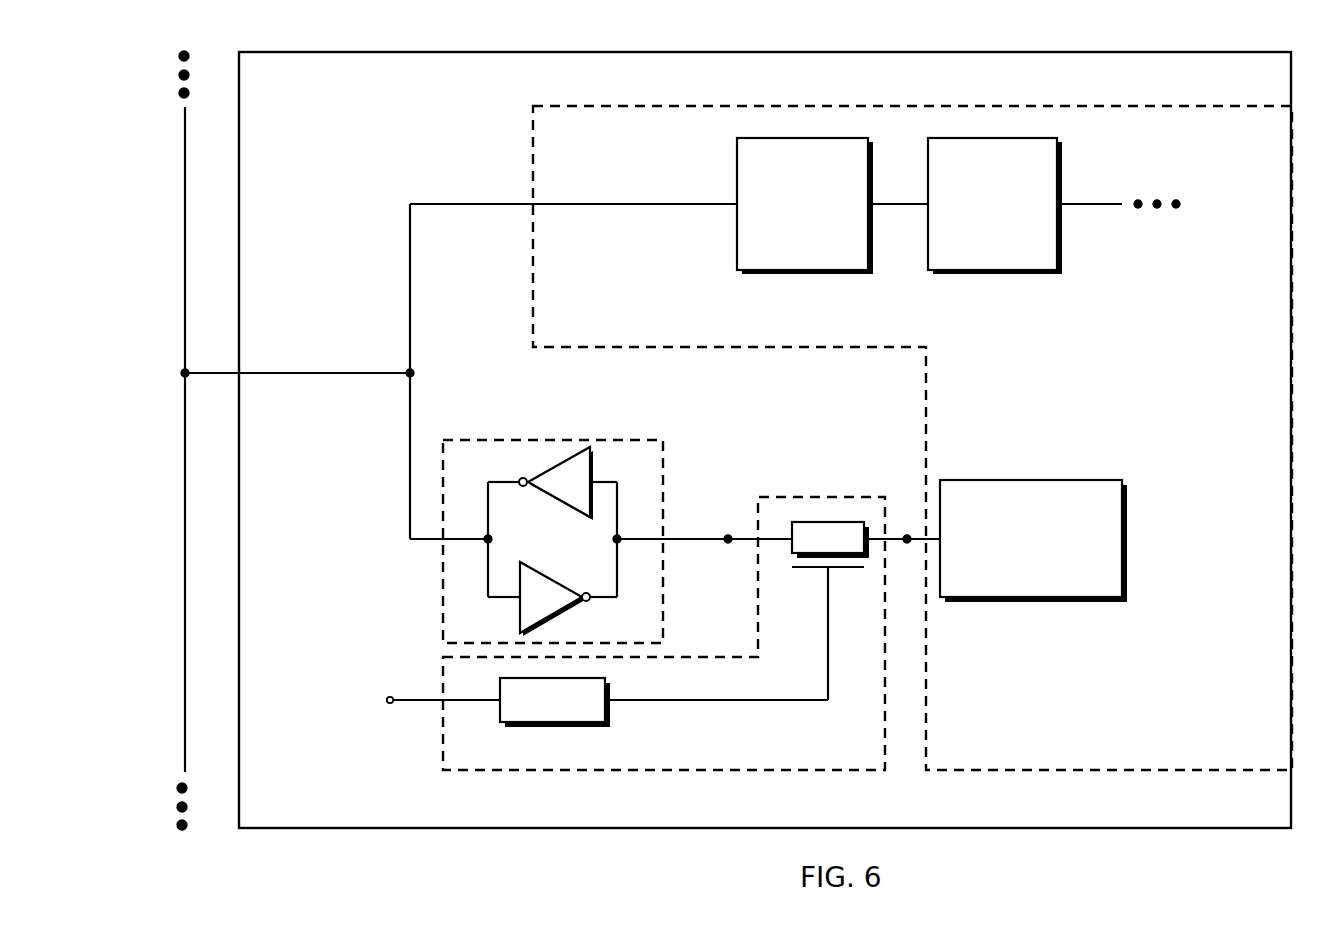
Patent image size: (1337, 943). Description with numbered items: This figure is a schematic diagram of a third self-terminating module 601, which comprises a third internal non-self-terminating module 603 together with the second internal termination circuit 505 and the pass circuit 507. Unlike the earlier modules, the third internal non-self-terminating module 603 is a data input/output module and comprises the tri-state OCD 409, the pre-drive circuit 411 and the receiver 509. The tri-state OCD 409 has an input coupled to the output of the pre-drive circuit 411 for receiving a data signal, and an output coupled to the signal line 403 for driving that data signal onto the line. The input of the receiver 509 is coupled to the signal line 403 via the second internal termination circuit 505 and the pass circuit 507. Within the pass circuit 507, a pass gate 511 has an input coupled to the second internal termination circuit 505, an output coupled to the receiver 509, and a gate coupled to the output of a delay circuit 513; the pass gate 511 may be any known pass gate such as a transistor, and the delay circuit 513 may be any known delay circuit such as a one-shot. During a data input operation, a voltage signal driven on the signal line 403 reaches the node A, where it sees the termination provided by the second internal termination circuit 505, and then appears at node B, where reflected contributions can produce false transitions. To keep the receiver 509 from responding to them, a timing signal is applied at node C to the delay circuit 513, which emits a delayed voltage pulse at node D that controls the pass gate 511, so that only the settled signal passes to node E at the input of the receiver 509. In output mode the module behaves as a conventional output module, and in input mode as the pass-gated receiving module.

The third self-terminating module 601 is at (1280, 52).
The third internal non-self-terminating module 603 is at (1113, 105).
The signal line 403 is at (183, 308).
The tri-state off-chip driver (OCD) 409 is at (770, 272).
The pre-drive circuit 411 is at (972, 272).
The second internal termination circuit 505 is at (577, 438).
The pass circuit 507 is at (745, 775).
The receiver 509 is at (1128, 537).
The pass gate 511 is at (823, 570).
The delay circuit 513 is at (532, 727).
The node A is at (412, 378).
The node B is at (728, 545).
The node C is at (432, 706).
The node D is at (830, 645).
The node E is at (906, 533).